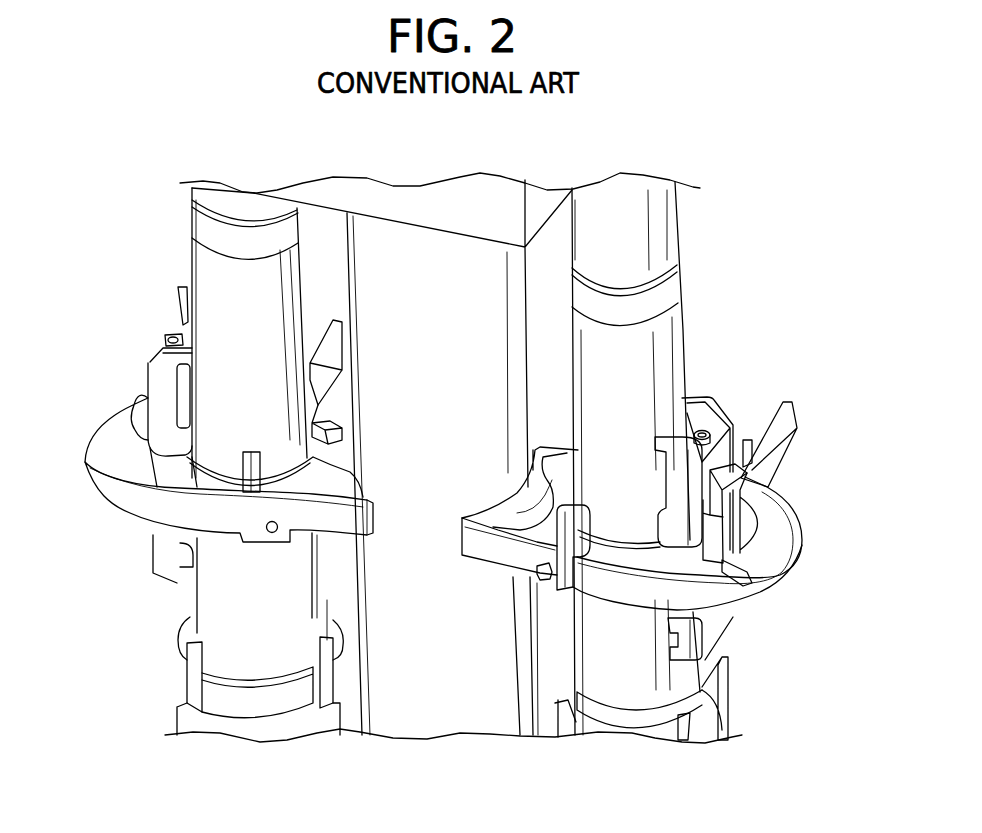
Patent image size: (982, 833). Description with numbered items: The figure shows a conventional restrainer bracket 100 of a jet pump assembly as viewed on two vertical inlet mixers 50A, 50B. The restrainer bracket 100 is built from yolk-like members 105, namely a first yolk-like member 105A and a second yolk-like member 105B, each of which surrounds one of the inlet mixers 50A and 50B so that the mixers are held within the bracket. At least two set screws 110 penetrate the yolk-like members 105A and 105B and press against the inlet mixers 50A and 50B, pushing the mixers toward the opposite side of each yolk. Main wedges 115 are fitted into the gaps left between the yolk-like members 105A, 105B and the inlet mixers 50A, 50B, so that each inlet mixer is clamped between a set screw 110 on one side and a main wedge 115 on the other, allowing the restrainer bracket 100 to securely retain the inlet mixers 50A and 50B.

The inlet mixer 50A is at (668, 334).
The inlet mixer 50B is at (207, 294).
The conventional restrainer bracket 100 is at (797, 415).
The yolk-like member 105 is at (783, 550).
The first yolk-like member 105A is at (723, 604).
The second yolk-like member 105B is at (118, 501).
The set screw 110 is at (535, 575).
The main wedge 115 is at (740, 519).